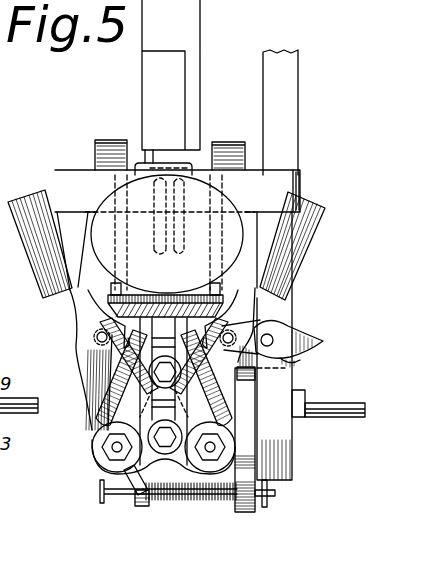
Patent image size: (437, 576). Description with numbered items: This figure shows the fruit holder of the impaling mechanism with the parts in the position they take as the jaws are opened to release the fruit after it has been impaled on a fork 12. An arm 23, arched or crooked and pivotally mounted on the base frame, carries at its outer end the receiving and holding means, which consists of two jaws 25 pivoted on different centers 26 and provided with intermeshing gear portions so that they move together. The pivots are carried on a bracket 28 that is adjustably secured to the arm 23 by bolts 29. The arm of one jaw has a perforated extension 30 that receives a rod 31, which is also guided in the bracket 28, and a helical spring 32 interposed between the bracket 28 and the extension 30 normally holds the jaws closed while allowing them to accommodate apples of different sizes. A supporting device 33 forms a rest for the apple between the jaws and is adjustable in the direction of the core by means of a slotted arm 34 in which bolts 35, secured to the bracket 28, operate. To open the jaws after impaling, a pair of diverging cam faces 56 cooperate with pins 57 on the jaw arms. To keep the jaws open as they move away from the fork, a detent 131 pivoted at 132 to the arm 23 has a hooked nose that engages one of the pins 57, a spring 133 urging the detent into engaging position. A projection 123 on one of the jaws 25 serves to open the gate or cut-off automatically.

The fork 12 is at (173, 158).
The arm 23 is at (292, 151).
The jaw 25 is at (50, 280).
The supporting device 33 is at (186, 297).
The slotted arm 34 is at (105, 364).
The cam face 56 is at (135, 366).
The pin 57 is at (96, 340).
The bolt 35 is at (128, 396).
The pivot center 26 is at (95, 452).
The detent 131 is at (325, 341).
The detent pivot 132 is at (298, 333).
The spring 133 is at (303, 362).
The bracket 28 is at (238, 402).
The bolt 29 is at (303, 398).
The projection 123 is at (365, 411).
The helical spring 32 is at (213, 500).
The rod 31 is at (106, 494).
The extension 30 is at (140, 494).